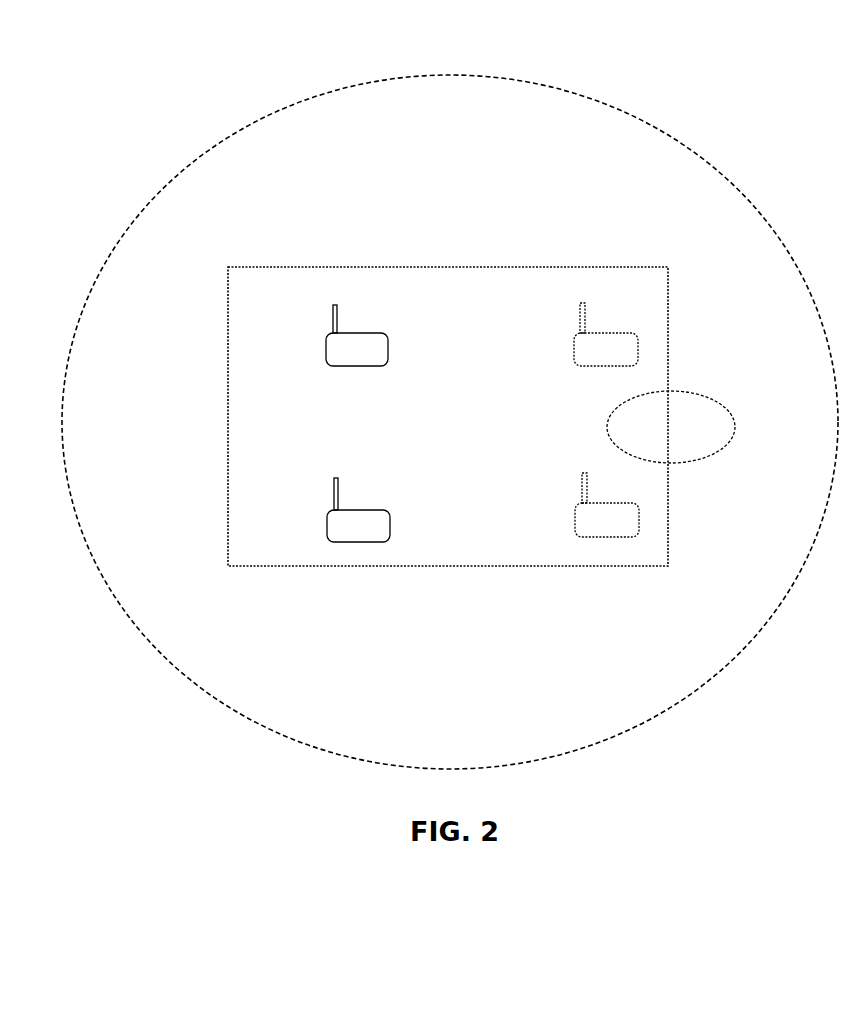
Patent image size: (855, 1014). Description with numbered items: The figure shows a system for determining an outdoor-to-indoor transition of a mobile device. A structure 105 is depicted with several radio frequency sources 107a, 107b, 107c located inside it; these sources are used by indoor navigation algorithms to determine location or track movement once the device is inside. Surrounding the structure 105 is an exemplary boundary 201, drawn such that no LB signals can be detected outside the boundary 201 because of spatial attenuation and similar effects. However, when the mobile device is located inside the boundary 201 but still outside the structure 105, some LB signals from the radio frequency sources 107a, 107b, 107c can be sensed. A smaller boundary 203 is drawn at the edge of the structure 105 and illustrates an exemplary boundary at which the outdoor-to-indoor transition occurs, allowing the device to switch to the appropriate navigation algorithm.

The boundary 201 is at (316, 98).
The structure 105 is at (655, 300).
The radio frequency source 107a is at (326, 348).
The radio frequency source 107b is at (327, 524).
The radio frequency source 107c is at (574, 348).
The boundary 203 is at (716, 400).